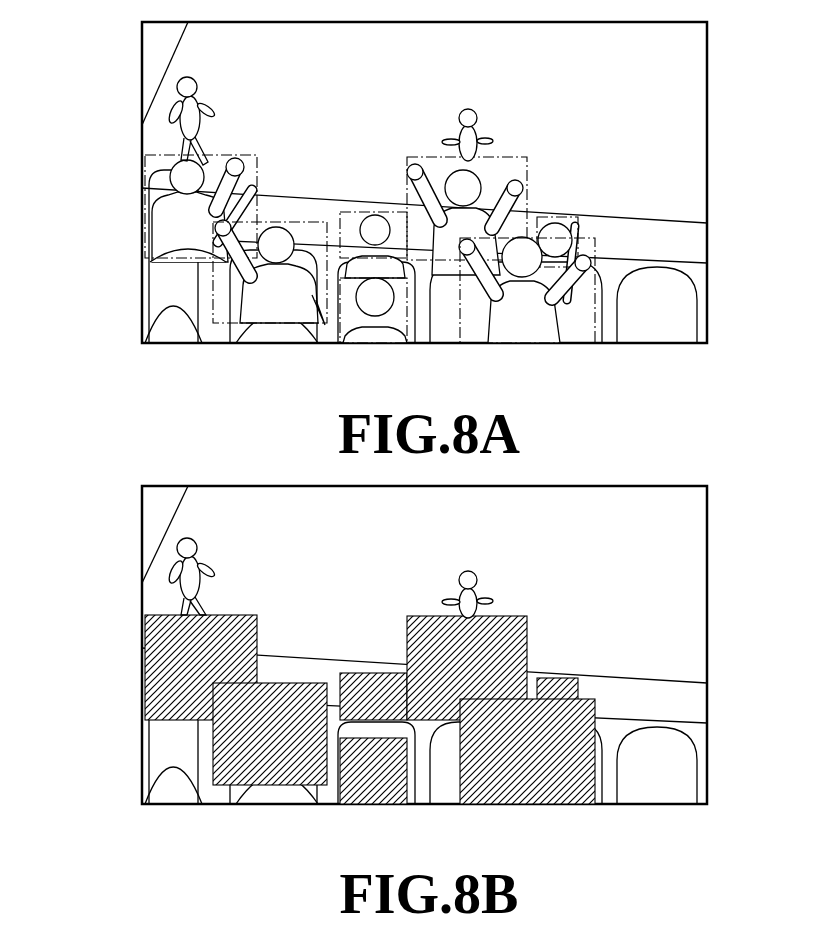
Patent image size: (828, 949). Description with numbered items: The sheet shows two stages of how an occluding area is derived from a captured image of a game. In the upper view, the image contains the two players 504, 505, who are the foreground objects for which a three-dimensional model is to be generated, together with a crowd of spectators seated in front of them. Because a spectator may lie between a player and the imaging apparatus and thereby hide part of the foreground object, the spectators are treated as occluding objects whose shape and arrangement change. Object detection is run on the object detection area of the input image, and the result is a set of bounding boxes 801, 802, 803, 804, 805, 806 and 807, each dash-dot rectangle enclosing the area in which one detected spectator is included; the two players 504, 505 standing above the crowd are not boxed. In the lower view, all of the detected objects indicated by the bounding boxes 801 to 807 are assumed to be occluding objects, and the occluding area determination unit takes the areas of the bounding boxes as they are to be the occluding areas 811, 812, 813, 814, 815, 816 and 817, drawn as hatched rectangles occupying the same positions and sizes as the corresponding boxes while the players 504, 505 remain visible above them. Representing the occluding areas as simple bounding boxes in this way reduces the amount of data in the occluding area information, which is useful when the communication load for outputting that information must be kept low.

In FIG. 8A, the player 504 is at (196, 85).
In FIG. 8B, the player 504 is at (196, 545).
In FIG. 8A, the player 505 is at (468, 108).
In FIG. 8B, the player 505 is at (468, 570).
In FIG. 8A, the bounding box 801 is at (512, 153).
In FIG. 8A, the bounding box 802 is at (148, 157).
In FIG. 8A, the bounding box 803 is at (273, 312).
In FIG. 8A, the bounding box 804 is at (374, 327).
In FIG. 8A, the bounding box 805 is at (377, 218).
In FIG. 8A, the bounding box 806 is at (521, 327).
In FIG. 8A, the bounding box 807 is at (570, 215).
In FIG. 8B, the occluding area 811 is at (512, 613).
In FIG. 8B, the occluding area 812 is at (163, 660).
In FIG. 8B, the occluding area 813 is at (274, 763).
In FIG. 8B, the occluding area 814 is at (375, 786).
In FIG. 8B, the occluding area 815 is at (378, 688).
In FIG. 8B, the occluding area 816 is at (523, 787).
In FIG. 8B, the occluding area 817 is at (556, 676).